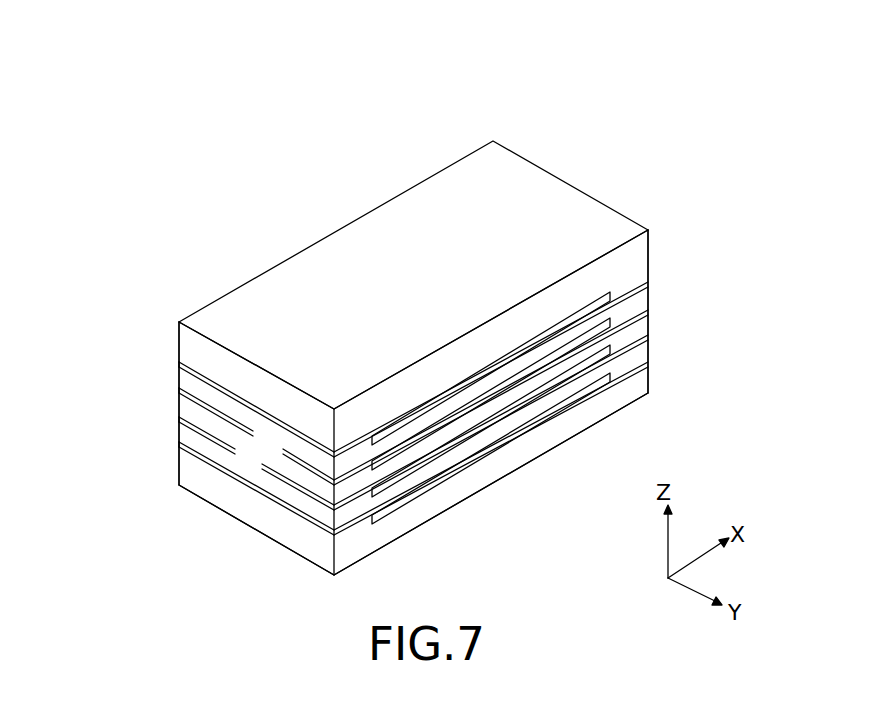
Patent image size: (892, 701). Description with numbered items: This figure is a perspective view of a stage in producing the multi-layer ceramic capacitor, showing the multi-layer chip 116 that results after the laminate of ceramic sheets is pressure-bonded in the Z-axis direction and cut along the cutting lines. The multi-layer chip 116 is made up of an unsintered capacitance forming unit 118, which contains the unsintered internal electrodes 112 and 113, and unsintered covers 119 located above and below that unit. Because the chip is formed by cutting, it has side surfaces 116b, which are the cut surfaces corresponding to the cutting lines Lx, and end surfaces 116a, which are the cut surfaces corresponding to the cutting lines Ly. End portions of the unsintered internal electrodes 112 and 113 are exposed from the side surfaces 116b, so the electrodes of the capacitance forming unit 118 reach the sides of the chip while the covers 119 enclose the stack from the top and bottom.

The multi-layer chip 116 is at (554, 120).
The end surfaces 116a is at (187, 465).
The side surfaces 116b is at (630, 265).
The unsintered internal electrodes 112 is at (179, 362).
The unsintered internal electrodes 113 is at (645, 283).
The unsintered capacitance forming unit 118 is at (278, 460).
The unsintered covers 119 is at (273, 395).